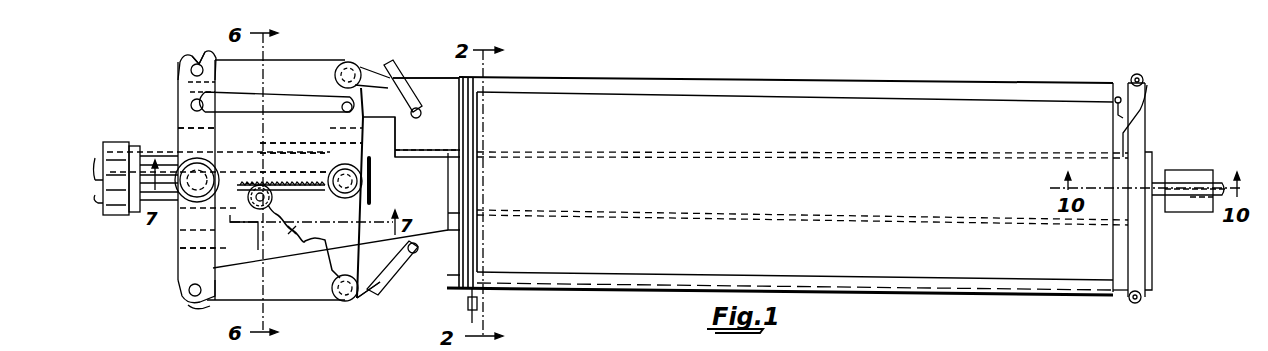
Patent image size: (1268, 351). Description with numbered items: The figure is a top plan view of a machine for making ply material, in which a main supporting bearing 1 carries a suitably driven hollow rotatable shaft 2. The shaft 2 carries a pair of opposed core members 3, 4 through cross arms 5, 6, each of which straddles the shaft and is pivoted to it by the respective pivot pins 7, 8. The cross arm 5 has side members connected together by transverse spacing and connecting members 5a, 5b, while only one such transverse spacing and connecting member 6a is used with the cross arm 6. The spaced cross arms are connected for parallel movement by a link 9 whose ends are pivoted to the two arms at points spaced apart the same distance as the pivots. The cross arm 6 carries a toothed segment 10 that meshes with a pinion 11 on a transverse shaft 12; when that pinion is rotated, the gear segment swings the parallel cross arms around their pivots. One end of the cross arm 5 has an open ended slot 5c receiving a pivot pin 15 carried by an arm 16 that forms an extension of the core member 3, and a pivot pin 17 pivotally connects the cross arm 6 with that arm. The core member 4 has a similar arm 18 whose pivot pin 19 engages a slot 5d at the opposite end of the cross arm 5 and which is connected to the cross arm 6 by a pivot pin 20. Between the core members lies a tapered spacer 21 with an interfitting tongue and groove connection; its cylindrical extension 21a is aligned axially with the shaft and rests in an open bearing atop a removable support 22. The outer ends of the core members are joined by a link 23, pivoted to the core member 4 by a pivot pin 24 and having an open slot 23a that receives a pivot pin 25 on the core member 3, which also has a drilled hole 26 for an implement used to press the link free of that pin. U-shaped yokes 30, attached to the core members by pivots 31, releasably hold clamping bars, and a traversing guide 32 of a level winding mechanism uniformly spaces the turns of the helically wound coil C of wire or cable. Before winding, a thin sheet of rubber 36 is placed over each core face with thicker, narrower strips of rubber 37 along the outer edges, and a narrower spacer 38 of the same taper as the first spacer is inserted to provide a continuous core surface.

The main supporting bearing 1 is at (108, 141).
The hollow rotatable shaft 2 is at (160, 148).
The core member 3 is at (447, 134).
The core member 4 is at (449, 250).
The cross arm 5 is at (215, 141).
The transverse spacing and connecting member 5a is at (185, 127).
The transverse spacing and connecting member 5b is at (186, 257).
The open ended slot 5c is at (200, 58).
The slot 5d is at (203, 306).
The cross arm 6 is at (327, 121).
The transverse spacing and connecting member 6a is at (337, 146).
The pivot pin 7 is at (220, 162).
The pivot pin 8 is at (364, 173).
The link 9 is at (273, 101).
The toothed segment 10 is at (291, 233).
The pinion 11 is at (253, 214).
The transverse shaft 12 is at (280, 190).
The pivot pin 15 is at (186, 63).
The arm 16 is at (308, 60).
The pivot pin 17 is at (350, 63).
The arm 18 is at (314, 298).
The pivot pin 19 is at (190, 286).
The pivot pin 20 is at (360, 300).
The tapered spacer 21 is at (702, 152).
The cylindrical extension 21a is at (1196, 205).
The support 22 is at (1192, 170).
The link 23 is at (1147, 252).
The open slot 23a is at (1147, 88).
The pivot pin 24 is at (1142, 300).
The pivot pin 25 is at (1133, 80).
The drilled hole 26 is at (1115, 105).
The U-shaped yoke 30 is at (394, 62).
The pivot 31 is at (420, 113).
The guide 32 is at (480, 304).
The thin sheet of rubber 36 is at (888, 283).
The strip of rubber 37 is at (655, 78).
The spacer 38 is at (426, 104).
The helically wound coil C is at (475, 272).